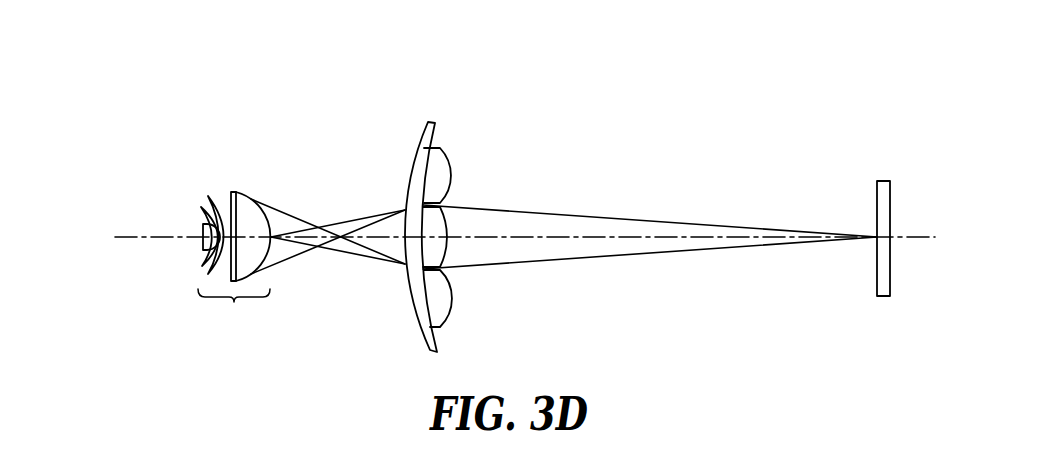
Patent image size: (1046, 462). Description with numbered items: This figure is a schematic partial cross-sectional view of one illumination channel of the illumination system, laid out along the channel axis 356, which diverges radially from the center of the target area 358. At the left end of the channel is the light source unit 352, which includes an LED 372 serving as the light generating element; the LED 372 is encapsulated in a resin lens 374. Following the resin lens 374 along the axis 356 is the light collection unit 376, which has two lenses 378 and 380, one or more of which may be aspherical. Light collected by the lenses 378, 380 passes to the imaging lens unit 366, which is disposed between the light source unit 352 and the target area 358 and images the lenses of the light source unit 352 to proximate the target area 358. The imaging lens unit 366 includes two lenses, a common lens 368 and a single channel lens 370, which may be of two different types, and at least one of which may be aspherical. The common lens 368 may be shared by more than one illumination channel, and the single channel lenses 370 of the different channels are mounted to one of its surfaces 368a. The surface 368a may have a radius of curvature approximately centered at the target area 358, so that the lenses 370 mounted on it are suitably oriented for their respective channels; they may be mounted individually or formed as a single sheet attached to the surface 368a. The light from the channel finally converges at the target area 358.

The light source unit 352 is at (218, 222).
The axis 356 is at (126, 236).
The target area 358 is at (877, 197).
The imaging lens unit 366 is at (443, 97).
The common lens 368 is at (423, 327).
The surface of the common lens 368a is at (436, 137).
The single channel lens 370 is at (440, 252).
The LED 372 is at (203, 248).
The resin lens 374 is at (205, 217).
The light collection unit 376 is at (220, 182).
The lens 378 is at (208, 208).
The lens 380 is at (250, 200).